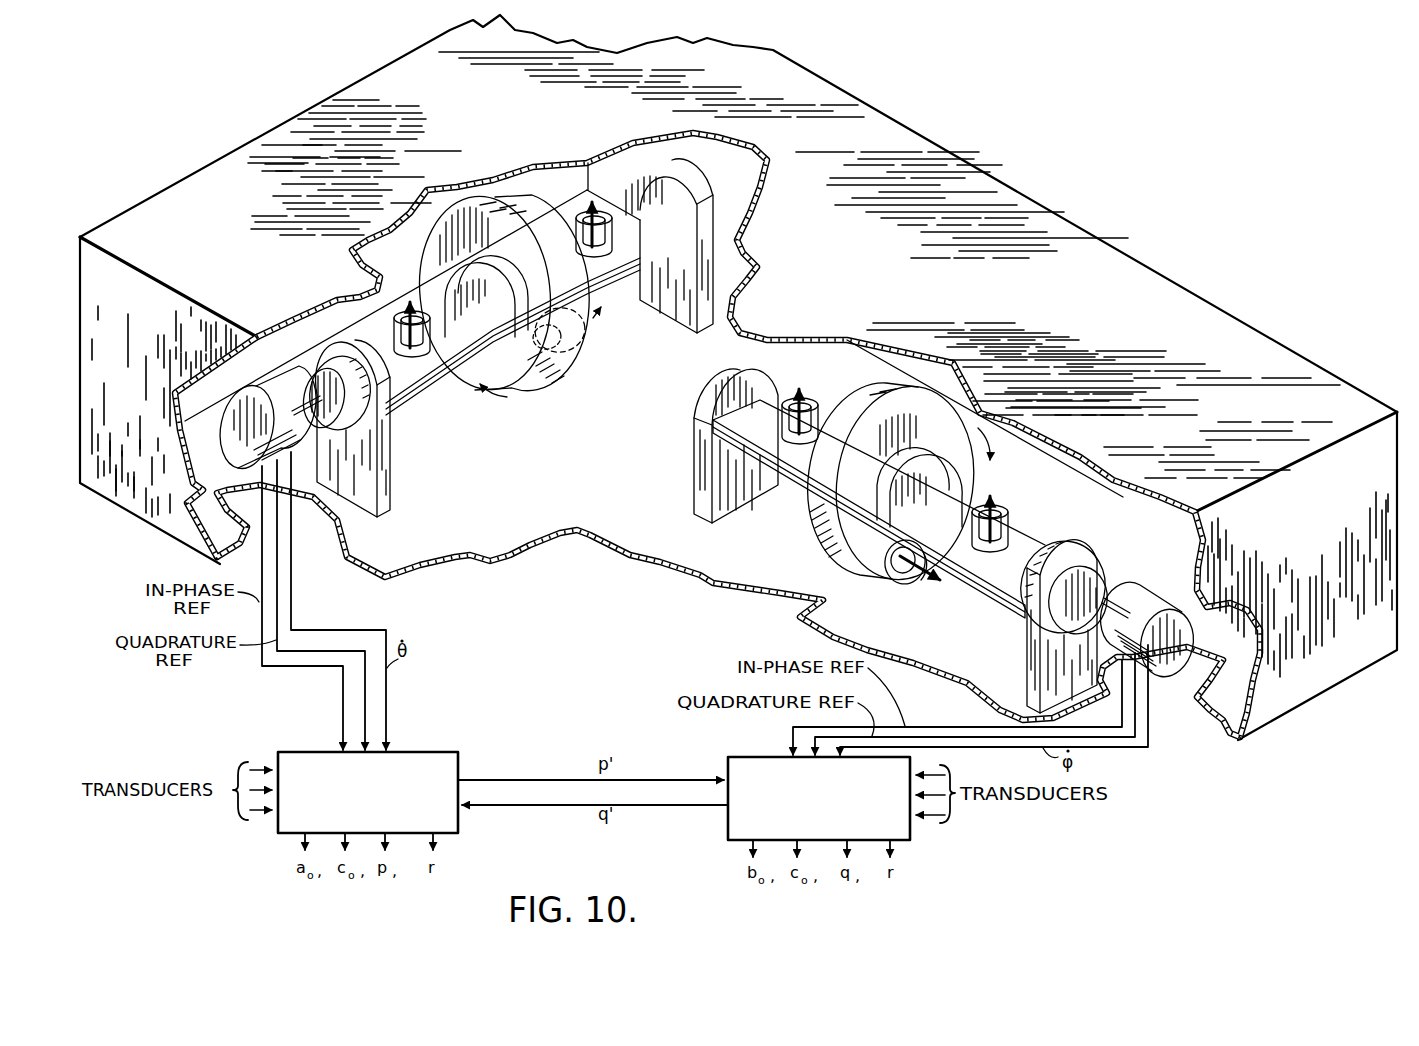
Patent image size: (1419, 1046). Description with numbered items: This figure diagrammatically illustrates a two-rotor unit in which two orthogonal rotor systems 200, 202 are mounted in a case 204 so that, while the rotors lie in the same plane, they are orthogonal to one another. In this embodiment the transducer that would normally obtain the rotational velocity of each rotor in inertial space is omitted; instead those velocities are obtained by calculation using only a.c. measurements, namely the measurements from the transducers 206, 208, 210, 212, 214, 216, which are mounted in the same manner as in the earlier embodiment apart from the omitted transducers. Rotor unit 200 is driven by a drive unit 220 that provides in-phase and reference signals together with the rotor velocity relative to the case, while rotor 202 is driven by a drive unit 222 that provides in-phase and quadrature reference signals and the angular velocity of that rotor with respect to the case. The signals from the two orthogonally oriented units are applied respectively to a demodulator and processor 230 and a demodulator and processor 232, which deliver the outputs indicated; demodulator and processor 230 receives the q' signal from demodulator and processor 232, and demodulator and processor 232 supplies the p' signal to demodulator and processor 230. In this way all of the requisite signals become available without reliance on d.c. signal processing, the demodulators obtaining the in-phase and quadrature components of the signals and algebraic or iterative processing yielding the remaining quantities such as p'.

The rotor system 200 is at (808, 523).
The rotor system 202 is at (525, 390).
The case 204 is at (1160, 266).
The transducer 206 is at (1004, 522).
The transducer 208 is at (898, 577).
The transducer 210 is at (814, 409).
The transducer 212 is at (578, 214).
The transducer 214 is at (583, 345).
The transducer 216 is at (417, 270).
The drive unit 220 is at (1152, 602).
The drive unit 222 is at (240, 437).
The demodulator and processor 230 is at (738, 757).
The demodulator and processor 232 is at (437, 752).